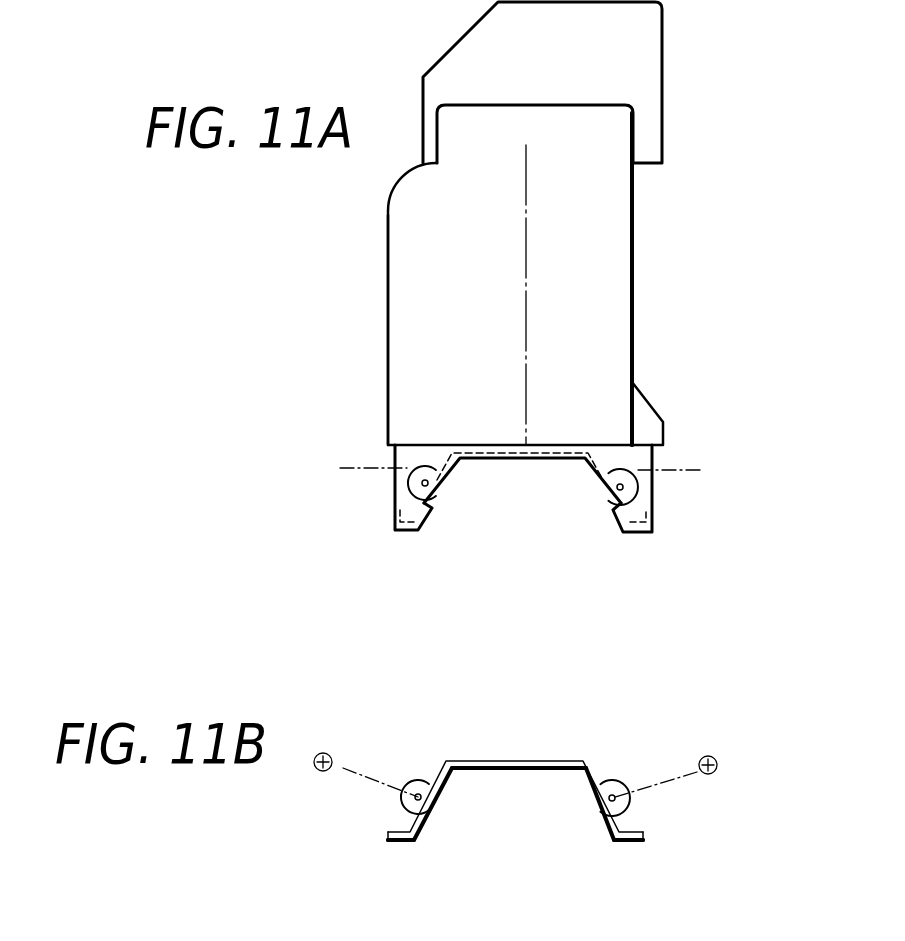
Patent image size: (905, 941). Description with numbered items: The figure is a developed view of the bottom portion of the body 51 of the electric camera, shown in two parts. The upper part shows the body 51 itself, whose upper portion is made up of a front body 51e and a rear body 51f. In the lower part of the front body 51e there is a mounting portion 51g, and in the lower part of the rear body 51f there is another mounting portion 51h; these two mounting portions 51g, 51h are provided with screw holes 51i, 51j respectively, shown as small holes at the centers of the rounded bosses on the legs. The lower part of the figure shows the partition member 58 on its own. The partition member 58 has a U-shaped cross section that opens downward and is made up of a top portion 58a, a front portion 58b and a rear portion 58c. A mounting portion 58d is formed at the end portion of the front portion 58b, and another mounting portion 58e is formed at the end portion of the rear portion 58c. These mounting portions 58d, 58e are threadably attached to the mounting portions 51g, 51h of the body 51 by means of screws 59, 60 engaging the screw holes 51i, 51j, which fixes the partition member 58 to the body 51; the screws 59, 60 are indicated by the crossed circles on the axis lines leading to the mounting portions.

In FIG. 11A, the body 51 is at (592, 182).
In FIG. 11A, the front body 51e is at (398, 270).
In FIG. 11A, the rear body 51f is at (617, 285).
In FIG. 11A, the mounting portion 51g is at (395, 508).
In FIG. 11A, the mounting portion 51h is at (640, 507).
In FIG. 11A, the screw hole 51i is at (422, 483).
In FIG. 11A, the screw hole 51j is at (624, 489).
In FIG. 11B, the partition member 58 is at (478, 761).
In FIG. 11B, the top portion 58a is at (533, 761).
In FIG. 11B, the front portion 58b is at (427, 828).
In FIG. 11B, the rear portion 58c is at (608, 836).
In FIG. 11B, the mounting portion 58d is at (415, 778).
In FIG. 11B, the mounting portion 58e is at (615, 783).
In FIG. 11B, the screw 59 is at (318, 771).
In FIG. 11B, the screw 60 is at (717, 758).